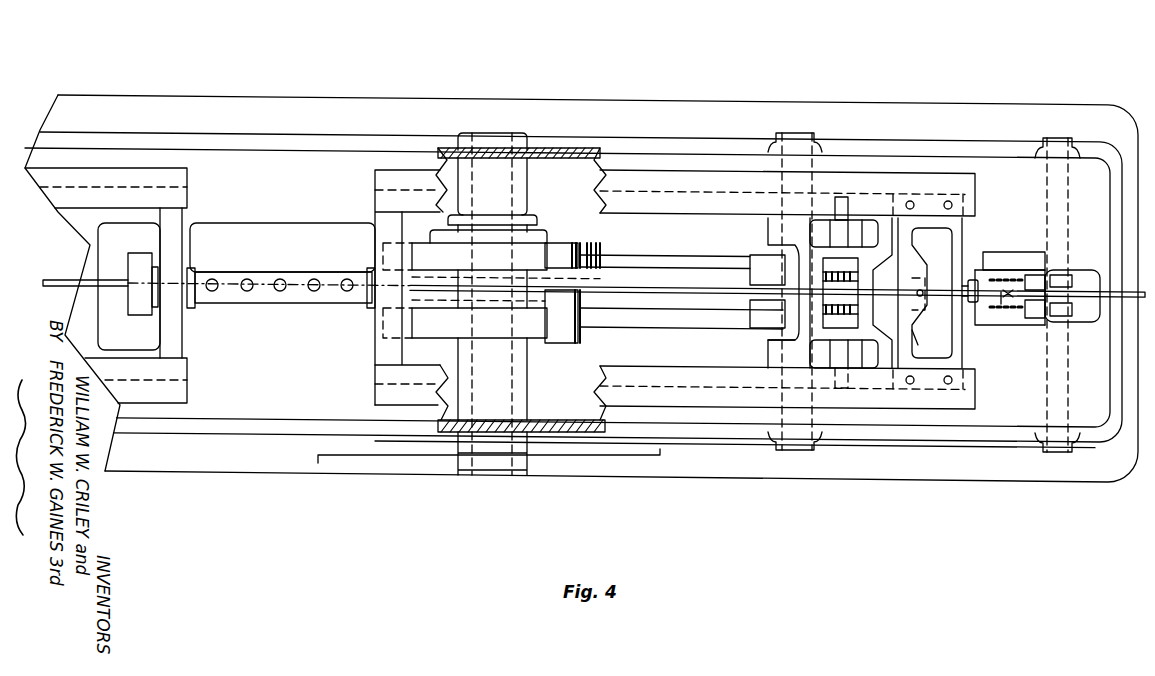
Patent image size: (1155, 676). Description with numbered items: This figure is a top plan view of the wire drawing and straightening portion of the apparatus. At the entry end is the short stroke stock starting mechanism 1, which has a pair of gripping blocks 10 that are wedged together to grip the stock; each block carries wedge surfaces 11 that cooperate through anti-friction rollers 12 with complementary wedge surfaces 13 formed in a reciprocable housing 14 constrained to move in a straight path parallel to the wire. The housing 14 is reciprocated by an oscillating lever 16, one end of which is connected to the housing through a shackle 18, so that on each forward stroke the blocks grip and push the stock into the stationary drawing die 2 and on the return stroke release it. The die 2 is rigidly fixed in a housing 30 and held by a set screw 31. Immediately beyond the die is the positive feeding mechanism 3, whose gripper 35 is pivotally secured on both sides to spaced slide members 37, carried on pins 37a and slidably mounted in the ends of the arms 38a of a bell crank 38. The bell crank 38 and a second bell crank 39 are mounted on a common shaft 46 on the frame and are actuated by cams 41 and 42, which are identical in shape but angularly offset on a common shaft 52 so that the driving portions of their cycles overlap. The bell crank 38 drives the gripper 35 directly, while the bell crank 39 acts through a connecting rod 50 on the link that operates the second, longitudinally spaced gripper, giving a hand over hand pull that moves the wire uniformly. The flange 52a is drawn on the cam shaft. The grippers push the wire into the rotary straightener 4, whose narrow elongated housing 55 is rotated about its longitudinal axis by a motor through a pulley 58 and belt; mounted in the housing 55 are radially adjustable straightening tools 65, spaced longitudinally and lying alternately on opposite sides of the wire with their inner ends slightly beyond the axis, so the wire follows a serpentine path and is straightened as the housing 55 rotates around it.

The short stroke stock starting mechanism 1 is at (1040, 258).
The stationary drawing die 2 is at (937, 293).
The positive feeding mechanism 3 is at (795, 265).
The rotary straightener 4 is at (300, 244).
The gripping blocks 10 is at (1008, 315).
The wedge surfaces 11 is at (992, 312).
The anti-friction rollers 12 is at (1000, 278).
The complementary wedge surfaces 13 is at (1006, 278).
The reciprocable housing 14 is at (1003, 320).
The oscillating lever 16 is at (1068, 312).
The shackle 18 is at (1068, 282).
The die housing 30 is at (912, 334).
The set screw 31 is at (921, 297).
The gripper 35 is at (840, 294).
The slide members 37 is at (848, 232).
The pins 37a is at (840, 216).
The bell crank 38 is at (657, 324).
The bell crank arms 38a is at (785, 352).
The bell crank 39 is at (668, 264).
The cam 41 is at (415, 333).
The cam 42 is at (420, 248).
The common shaft 46 is at (806, 451).
The connecting rod 50 is at (625, 272).
The common shaft 52 is at (515, 393).
The spindle flange 52a is at (520, 228).
The housing 55 is at (262, 303).
The pulley 58 is at (143, 315).
The straightening tools 65 is at (212, 291).